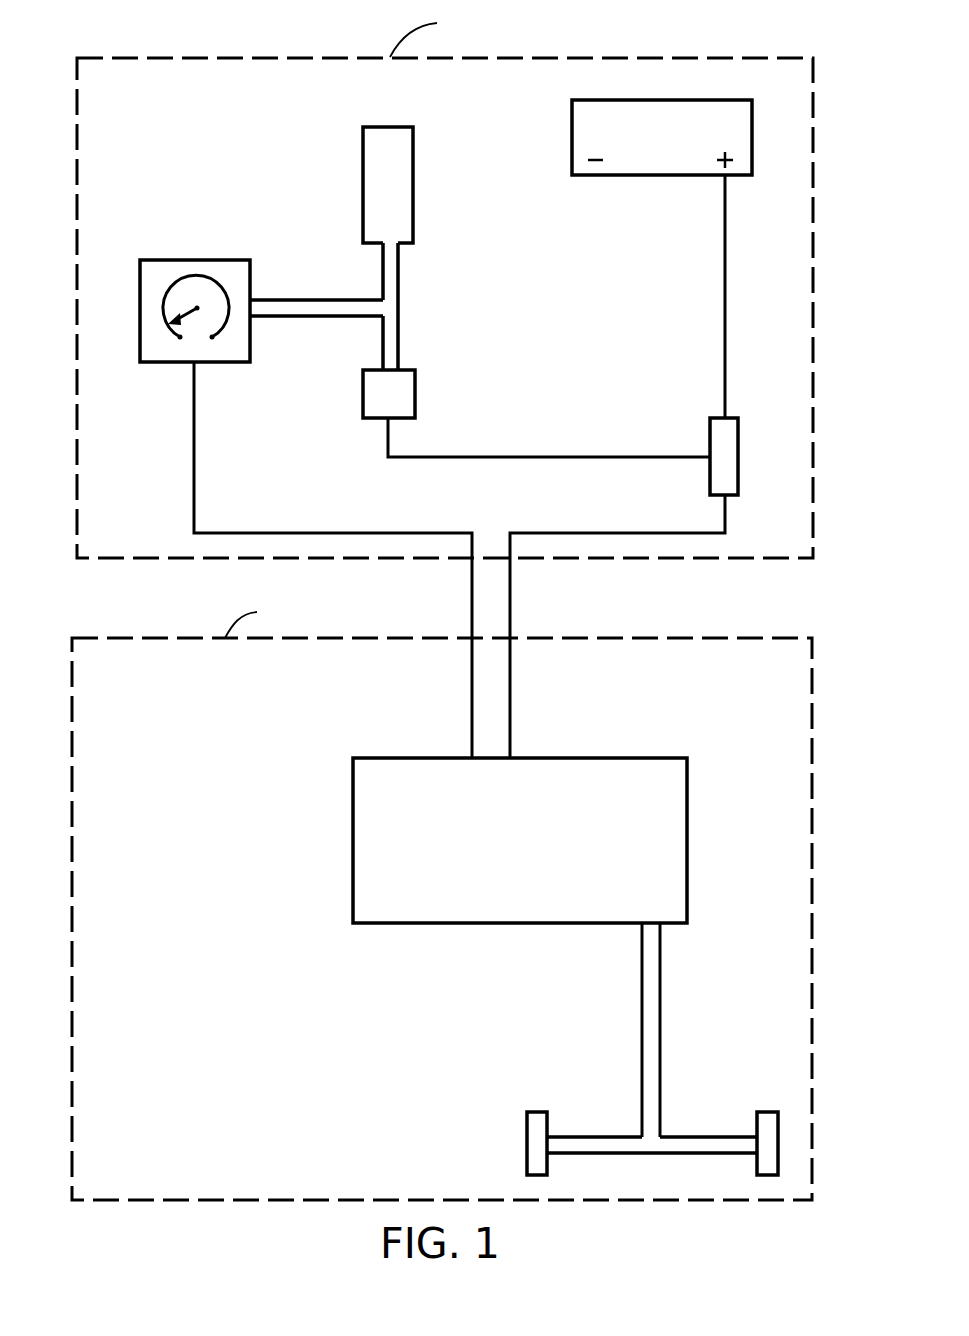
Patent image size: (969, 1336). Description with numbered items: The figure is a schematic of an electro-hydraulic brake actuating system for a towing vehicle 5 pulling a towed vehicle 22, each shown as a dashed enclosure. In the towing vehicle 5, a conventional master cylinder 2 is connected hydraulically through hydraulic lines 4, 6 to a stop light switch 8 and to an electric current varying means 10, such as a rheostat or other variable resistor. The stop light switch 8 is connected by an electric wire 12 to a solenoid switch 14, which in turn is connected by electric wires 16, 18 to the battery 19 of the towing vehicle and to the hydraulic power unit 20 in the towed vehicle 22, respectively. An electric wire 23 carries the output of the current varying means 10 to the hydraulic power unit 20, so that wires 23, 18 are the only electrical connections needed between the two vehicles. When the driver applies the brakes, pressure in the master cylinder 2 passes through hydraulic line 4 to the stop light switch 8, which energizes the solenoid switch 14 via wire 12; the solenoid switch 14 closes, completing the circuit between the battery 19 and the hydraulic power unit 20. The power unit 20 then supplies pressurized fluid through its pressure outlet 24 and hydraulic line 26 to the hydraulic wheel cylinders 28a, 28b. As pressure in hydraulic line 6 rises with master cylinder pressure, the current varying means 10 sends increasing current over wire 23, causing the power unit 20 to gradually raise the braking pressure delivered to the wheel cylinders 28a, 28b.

The master cylinder 2 is at (413, 193).
The hydraulic line 4 is at (400, 272).
The towing vehicle 5 is at (768, 57).
The hydraulic line 6 is at (327, 298).
The stop light switch 8 is at (363, 393).
The electric current varying means 10 is at (213, 260).
The electric wire 12 is at (604, 455).
The solenoid switch 14 is at (738, 470).
The electric wire 16 is at (727, 258).
The electric wire 18 is at (636, 531).
The battery 19 is at (752, 118).
The hydraulic power unit 20 is at (539, 860).
The towed vehicle 22 is at (813, 697).
The electric wire 23 is at (382, 531).
The pressure outlet 24 is at (663, 928).
The hydraulic line 26 is at (660, 1032).
The hydraulic wheel cylinder 28a is at (538, 1115).
The hydraulic wheel cylinder 28b is at (767, 1115).